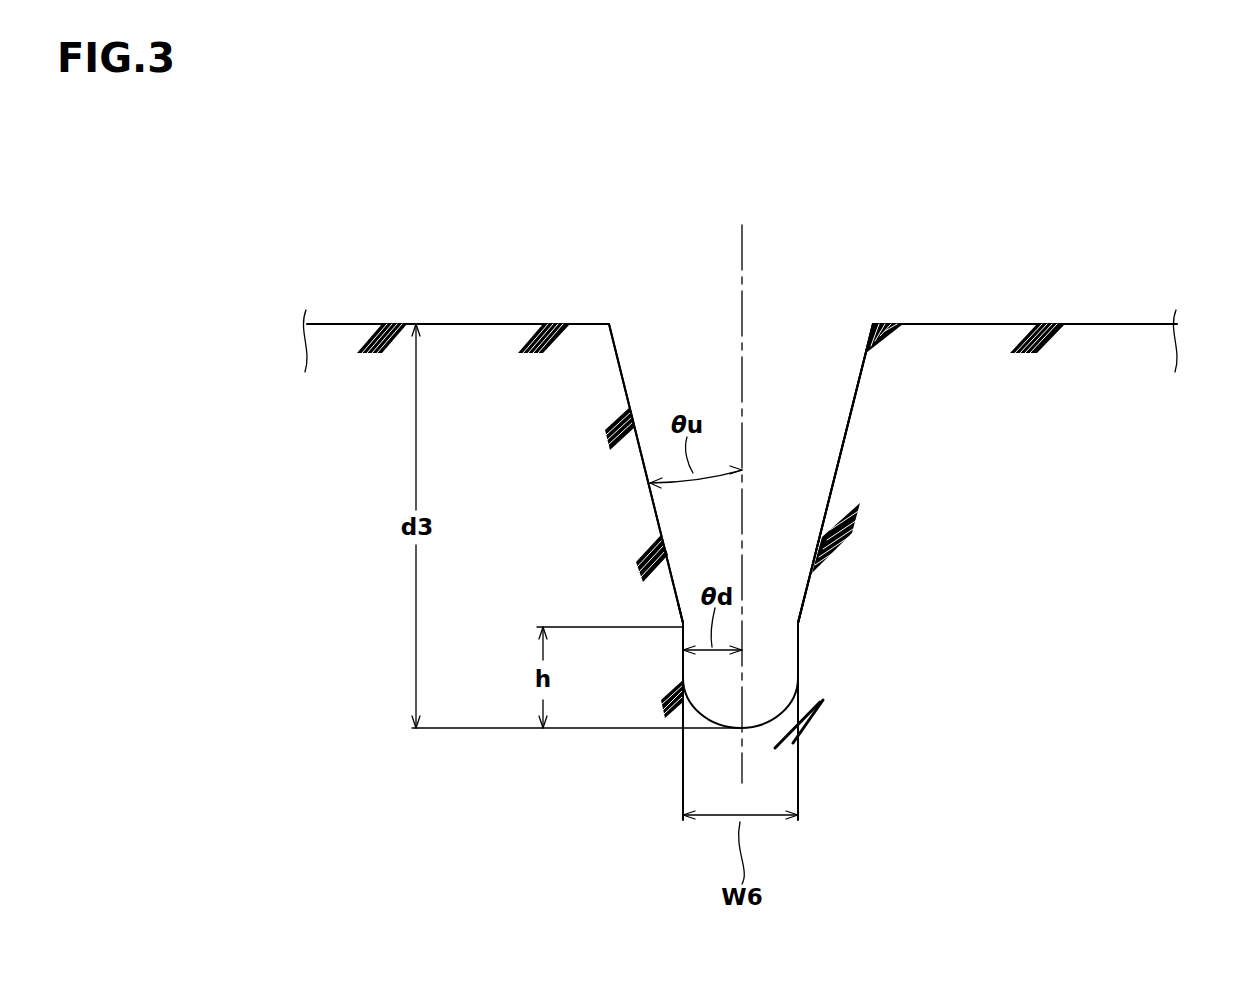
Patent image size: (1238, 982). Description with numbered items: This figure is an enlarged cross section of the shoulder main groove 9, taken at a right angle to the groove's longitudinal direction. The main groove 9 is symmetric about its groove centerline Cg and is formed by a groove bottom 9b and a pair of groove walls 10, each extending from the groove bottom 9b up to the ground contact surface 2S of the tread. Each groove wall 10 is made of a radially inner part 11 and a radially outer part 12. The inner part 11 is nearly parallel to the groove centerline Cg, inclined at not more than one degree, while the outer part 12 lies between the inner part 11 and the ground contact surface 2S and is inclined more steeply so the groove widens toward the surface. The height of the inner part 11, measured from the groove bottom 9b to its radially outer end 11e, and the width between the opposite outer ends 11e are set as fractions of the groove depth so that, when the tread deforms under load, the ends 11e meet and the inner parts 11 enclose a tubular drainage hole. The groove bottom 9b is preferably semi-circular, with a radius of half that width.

The main groove 9 is at (813, 317).
The groove bottom 9b is at (743, 728).
The groove wall 10 is at (622, 372).
The radially inner part 11 is at (798, 647).
The radially outer end 11e is at (684, 622).
The radially outer part 12 is at (845, 443).
The ground contact surface 2S is at (1117, 324).
The groove centerline Cg is at (741, 487).